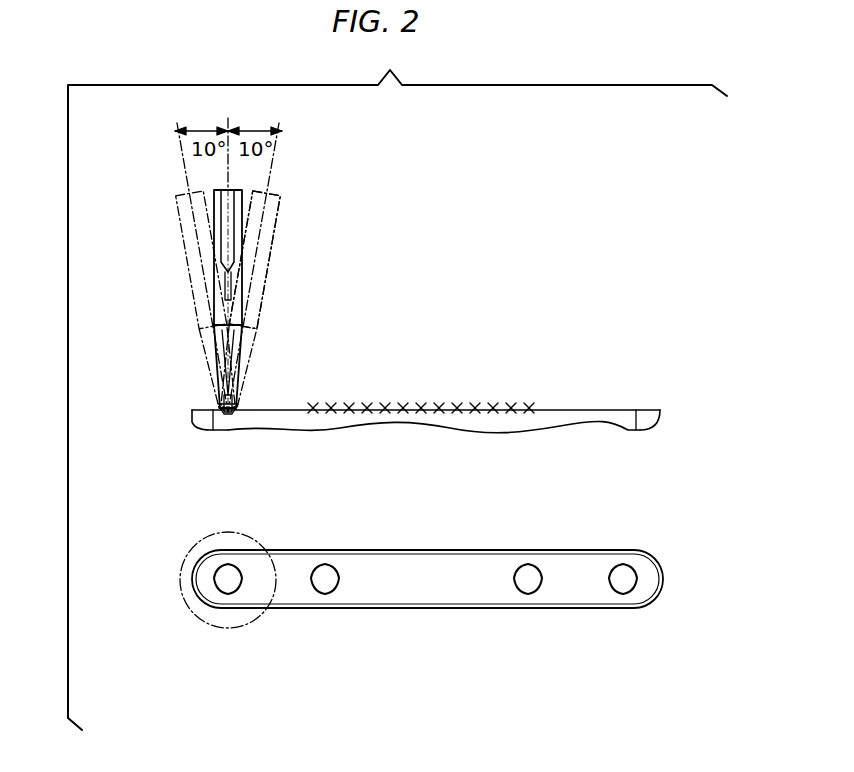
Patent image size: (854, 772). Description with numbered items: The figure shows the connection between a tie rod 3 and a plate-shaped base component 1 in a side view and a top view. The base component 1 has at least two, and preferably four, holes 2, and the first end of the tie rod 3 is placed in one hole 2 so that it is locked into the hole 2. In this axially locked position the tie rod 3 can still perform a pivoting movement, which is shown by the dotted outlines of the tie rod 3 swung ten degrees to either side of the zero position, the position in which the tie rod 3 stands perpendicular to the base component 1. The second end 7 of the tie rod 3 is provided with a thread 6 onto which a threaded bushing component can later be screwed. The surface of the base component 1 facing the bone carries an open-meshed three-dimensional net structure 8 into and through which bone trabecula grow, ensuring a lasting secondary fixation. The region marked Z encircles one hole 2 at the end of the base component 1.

The plate-shaped base component 1 is at (592, 411).
The hole 2 is at (330, 568).
The tie rod 3 is at (220, 340).
The thread 6 is at (246, 245).
The second end of the tie rod 7 is at (212, 216).
The open-meshed three-dimensional net structure 8 is at (495, 402).
The enlarged detail region Z is at (196, 622).